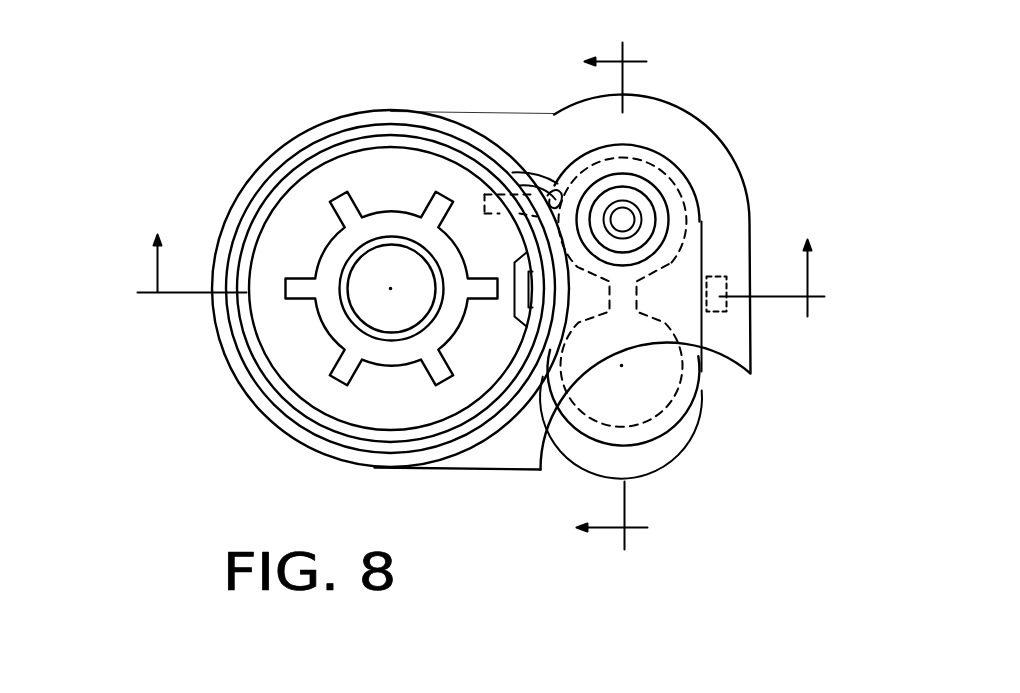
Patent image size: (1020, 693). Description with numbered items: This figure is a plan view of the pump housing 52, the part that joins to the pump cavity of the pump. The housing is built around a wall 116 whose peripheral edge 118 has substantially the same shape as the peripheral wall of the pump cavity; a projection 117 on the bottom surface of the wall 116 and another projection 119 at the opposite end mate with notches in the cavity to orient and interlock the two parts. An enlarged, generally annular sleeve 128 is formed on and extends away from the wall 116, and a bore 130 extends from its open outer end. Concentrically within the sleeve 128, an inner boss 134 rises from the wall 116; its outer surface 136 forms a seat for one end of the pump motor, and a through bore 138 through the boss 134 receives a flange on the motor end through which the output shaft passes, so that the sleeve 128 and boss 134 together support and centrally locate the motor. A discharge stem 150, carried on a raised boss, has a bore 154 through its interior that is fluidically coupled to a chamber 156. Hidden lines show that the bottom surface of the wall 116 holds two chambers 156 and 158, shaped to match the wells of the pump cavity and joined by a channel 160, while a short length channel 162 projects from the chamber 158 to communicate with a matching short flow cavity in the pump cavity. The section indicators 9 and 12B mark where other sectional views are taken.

The pump housing 52 is at (320, 104).
The wall 116 is at (505, 437).
The projection 117 is at (725, 303).
The peripheral edge 118 is at (382, 465).
The projection 119 is at (243, 307).
The annular sleeve 128 is at (303, 427).
The bore 130 is at (302, 172).
The inner boss 134 is at (328, 335).
The outer surface 136 is at (322, 275).
The through bore 138 is at (355, 267).
The discharge stem 150 is at (597, 212).
The bore 154 is at (622, 210).
The chamber 156 is at (655, 410).
The chamber 158 is at (663, 172).
The channel 160 is at (636, 300).
The short length channel 162 is at (547, 207).
The section line 9 is at (481, 256).
The section line 12B is at (644, 297).